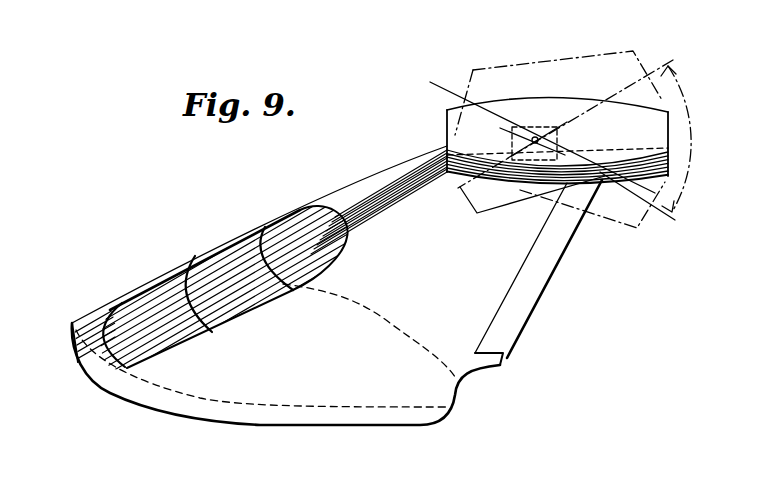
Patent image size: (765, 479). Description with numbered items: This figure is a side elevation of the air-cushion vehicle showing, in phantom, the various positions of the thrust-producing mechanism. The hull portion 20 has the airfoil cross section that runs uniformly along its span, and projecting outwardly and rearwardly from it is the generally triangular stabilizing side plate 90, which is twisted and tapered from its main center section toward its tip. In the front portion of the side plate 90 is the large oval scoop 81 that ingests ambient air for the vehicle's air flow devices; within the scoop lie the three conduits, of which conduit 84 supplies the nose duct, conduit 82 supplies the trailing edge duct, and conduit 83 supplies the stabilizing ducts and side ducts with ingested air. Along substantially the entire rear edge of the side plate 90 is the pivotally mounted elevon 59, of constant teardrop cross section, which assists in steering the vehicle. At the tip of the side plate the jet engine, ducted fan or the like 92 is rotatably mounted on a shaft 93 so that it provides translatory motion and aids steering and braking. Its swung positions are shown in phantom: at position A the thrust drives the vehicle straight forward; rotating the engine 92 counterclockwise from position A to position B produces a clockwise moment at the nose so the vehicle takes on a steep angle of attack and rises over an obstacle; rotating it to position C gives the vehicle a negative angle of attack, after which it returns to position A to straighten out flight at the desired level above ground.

The hull portion 20 is at (302, 418).
The elevon 59 is at (538, 296).
The scoop 81 is at (217, 260).
The conduit 82 is at (307, 222).
The conduit 83 is at (242, 238).
The conduit 84 is at (160, 287).
The stabilizing side plate 90 is at (385, 195).
The jet engine 92 is at (447, 124).
The shaft 93 is at (548, 130).
The position A is at (473, 100).
The position B is at (585, 80).
The position C is at (613, 208).